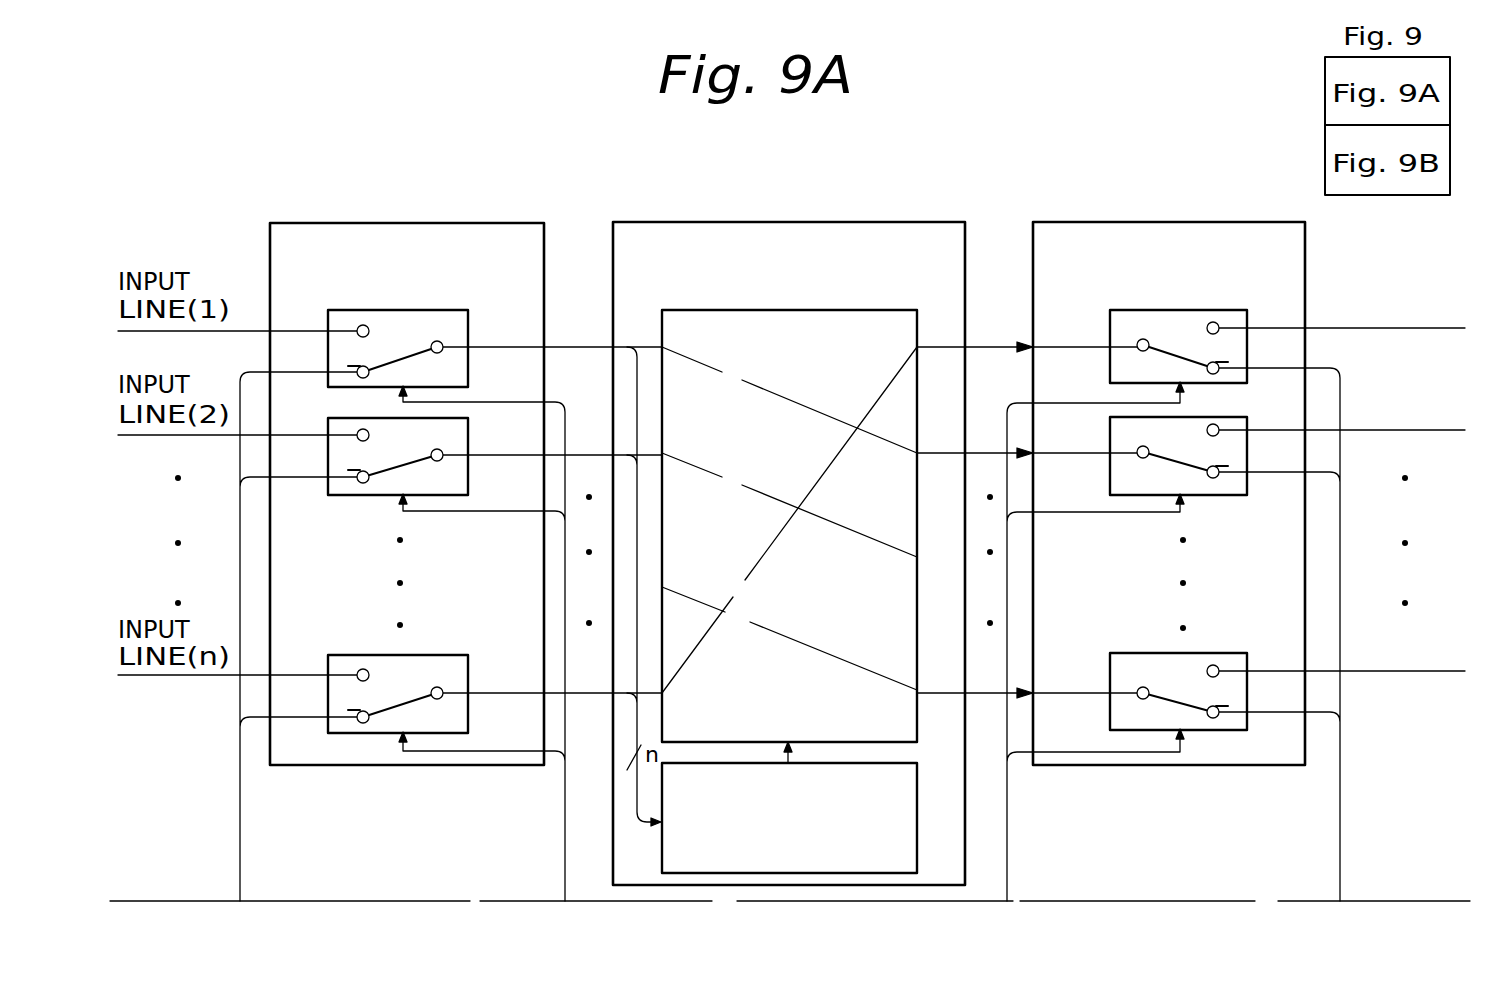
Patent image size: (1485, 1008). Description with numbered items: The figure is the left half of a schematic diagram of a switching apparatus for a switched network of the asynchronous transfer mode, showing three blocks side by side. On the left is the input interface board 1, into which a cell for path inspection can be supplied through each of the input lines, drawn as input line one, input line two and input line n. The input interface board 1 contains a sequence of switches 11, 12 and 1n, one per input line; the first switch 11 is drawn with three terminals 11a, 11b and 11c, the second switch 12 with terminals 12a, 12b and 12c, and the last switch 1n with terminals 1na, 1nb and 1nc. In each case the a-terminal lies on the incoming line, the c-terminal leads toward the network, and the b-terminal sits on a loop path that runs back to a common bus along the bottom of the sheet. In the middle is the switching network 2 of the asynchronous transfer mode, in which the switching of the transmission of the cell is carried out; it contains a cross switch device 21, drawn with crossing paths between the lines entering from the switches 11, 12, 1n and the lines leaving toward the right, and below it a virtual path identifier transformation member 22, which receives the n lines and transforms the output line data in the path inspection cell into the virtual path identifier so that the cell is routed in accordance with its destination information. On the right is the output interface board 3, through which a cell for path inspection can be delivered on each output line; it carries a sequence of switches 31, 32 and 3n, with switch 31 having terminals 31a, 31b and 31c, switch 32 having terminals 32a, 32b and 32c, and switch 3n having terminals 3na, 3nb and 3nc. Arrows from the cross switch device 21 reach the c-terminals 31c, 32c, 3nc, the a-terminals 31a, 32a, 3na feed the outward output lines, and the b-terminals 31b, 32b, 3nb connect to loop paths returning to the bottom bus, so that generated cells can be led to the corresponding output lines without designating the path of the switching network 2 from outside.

The input interface board 1 is at (521, 223).
The switching network of the asynchronous transfer mode 2 is at (876, 222).
The output interface board 3 is at (1236, 222).
The switch 11 is at (469, 328).
The terminal of switch 11a is at (363, 325).
The terminal of switch 11b is at (358, 377).
The terminal of switch 11c is at (437, 341).
The switch 12 is at (469, 484).
The terminal of switch 12a is at (363, 429).
The terminal of switch 12b is at (360, 483).
The terminal of switch 12c is at (441, 450).
The switch 1n is at (469, 664).
The terminal of switch 1na is at (363, 669).
The terminal of switch 1nb is at (360, 723).
The terminal of switch 1nc is at (437, 687).
The cross switch device 21 is at (917, 320).
The virtual path identifier transformation member 22 is at (917, 776).
The switch 31 is at (1109, 320).
The terminal of switch 31a is at (1213, 322).
The terminal of switch 31b is at (1215, 374).
The terminal of switch 31c is at (1143, 339).
The switch 32 is at (1109, 433).
The terminal of switch 32a is at (1213, 424).
The terminal of switch 32b is at (1215, 478).
The terminal of switch 32c is at (1139, 457).
The switch 3n is at (1110, 660).
The terminal of switch 3na is at (1213, 665).
The terminal of switch 3nb is at (1215, 718).
The terminal of switch 3nc is at (1143, 687).